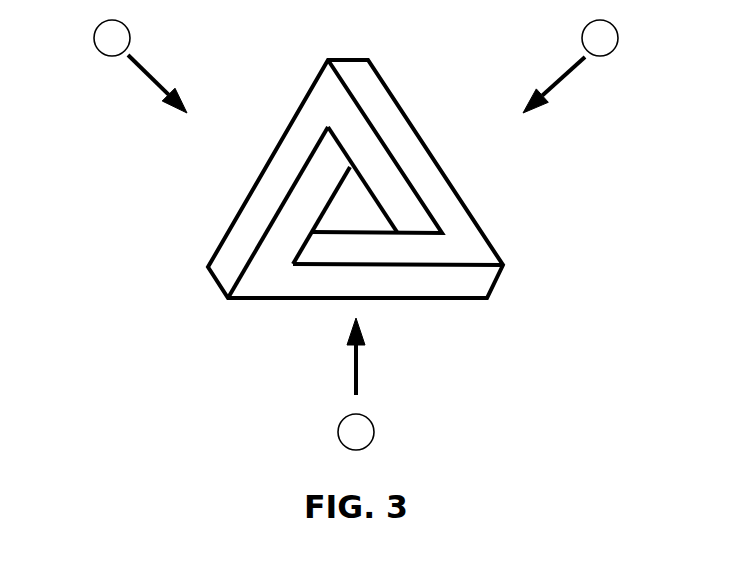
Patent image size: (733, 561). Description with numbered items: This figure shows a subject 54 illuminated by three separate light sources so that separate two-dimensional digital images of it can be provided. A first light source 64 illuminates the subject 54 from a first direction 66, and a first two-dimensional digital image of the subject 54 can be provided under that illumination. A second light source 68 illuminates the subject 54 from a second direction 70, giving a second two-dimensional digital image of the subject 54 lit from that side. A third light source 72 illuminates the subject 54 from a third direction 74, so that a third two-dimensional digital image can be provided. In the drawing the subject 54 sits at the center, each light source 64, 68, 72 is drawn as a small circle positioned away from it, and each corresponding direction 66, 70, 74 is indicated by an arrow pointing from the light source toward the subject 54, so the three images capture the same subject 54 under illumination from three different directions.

The subject 54 is at (372, 63).
The first light source 64 is at (93, 38).
The first direction 66 is at (158, 77).
The second light source 68 is at (618, 38).
The second direction 70 is at (558, 78).
The third light source 72 is at (338, 432).
The third direction 74 is at (358, 367).